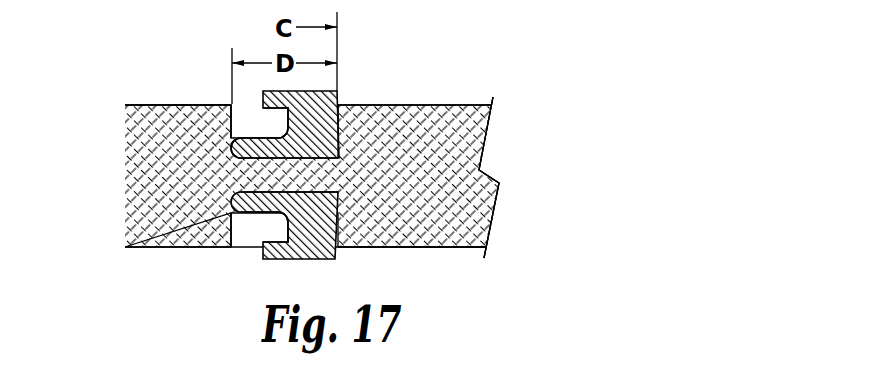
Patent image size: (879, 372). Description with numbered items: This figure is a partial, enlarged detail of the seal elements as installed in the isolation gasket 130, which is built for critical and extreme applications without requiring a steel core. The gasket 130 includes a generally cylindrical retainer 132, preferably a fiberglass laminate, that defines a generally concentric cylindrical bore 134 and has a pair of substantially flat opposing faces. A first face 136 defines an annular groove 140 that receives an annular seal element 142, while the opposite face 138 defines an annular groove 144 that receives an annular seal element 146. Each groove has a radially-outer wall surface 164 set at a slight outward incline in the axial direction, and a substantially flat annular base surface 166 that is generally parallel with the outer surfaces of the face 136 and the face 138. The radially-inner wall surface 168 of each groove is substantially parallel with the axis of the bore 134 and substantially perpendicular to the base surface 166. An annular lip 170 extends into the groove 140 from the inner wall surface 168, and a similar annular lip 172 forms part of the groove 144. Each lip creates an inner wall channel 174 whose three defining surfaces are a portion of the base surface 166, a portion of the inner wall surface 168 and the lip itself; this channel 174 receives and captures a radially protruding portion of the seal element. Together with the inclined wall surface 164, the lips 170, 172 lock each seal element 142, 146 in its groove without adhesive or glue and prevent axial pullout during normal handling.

The isolation gasket 130 is at (524, 133).
The retainer 132 is at (450, 152).
The bore 134 is at (70, 184).
The first face 136 is at (441, 105).
The opposite face 138 is at (463, 247).
The annular groove 140 is at (250, 117).
The annular seal element 142 is at (310, 91).
The annular groove 144 is at (262, 225).
The annular seal element 146 is at (302, 259).
The radially-outer wall surface 164 is at (338, 118).
The annular base surface 166 is at (252, 180).
The radially-inner wall surface 168 is at (231, 107).
The annular lip 170 is at (231, 138).
The annular lip 172 is at (231, 213).
The inner wall channel 174 is at (232, 148).